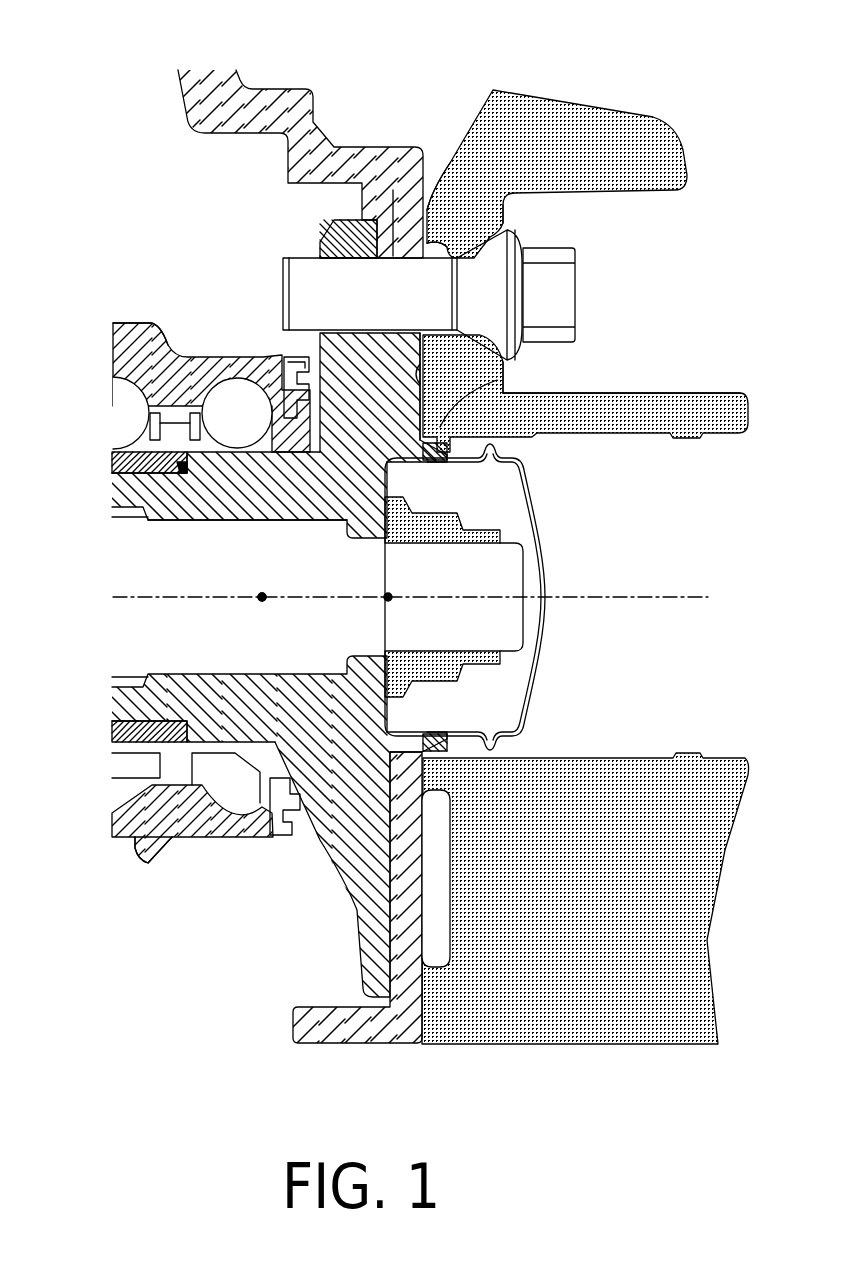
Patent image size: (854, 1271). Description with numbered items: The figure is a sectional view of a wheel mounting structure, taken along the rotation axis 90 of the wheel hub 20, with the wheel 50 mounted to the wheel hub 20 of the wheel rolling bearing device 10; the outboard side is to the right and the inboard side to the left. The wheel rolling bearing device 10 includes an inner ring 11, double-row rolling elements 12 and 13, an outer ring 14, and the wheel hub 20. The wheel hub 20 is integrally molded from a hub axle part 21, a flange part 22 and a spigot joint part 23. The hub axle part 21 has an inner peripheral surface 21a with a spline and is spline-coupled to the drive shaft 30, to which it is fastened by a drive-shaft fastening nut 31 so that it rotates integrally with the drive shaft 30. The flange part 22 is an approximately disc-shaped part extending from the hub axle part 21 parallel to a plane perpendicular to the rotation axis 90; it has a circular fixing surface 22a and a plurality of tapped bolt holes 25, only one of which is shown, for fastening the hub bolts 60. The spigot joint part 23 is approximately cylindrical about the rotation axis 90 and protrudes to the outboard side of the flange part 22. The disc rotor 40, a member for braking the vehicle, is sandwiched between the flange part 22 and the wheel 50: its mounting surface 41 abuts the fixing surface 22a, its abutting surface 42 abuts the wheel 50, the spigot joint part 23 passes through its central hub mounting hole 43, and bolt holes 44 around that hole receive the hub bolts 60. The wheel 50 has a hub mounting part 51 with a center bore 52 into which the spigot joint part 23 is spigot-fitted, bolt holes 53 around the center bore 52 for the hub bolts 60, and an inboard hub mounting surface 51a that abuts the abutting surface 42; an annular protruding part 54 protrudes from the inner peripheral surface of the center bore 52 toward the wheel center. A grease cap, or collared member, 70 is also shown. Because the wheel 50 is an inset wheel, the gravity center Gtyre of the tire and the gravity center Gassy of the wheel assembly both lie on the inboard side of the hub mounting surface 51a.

The wheel rolling bearing device 10 is at (60, 320).
The inner ring 11 is at (110, 458).
The rolling element 12 is at (118, 402).
The rolling element 13 is at (152, 420).
The outer ring 14 is at (132, 348).
The wheel hub 20 is at (255, 596).
The hub axle part 21 is at (118, 488).
The inner peripheral surface 21a is at (200, 528).
The flange part 22 is at (333, 242).
The fixing surface 22a is at (320, 352).
The spigot joint part 23 is at (423, 447).
The bolt hole 25 is at (312, 250).
The drive shaft 30 is at (120, 572).
The drive-shaft fastening nut 31 is at (462, 530).
The disc rotor 40 is at (288, 97).
The mounting surface 41 is at (366, 214).
The abutting surface 42 is at (428, 236).
The hub mounting hole 43 is at (396, 500).
The bolt hole 44 is at (365, 218).
The wheel 50 is at (608, 525).
The hub mounting part 51 is at (524, 100).
The hub mounting surface 51a is at (414, 378).
The center bore 52 is at (548, 480).
The bolt hole 53 is at (503, 203).
The annular protruding part 54 is at (503, 380).
The hub bolt 60 is at (577, 282).
The grease cap 70 is at (555, 543).
The rotation axis 90 is at (153, 597).
The gravity center of the tire Gtyre is at (261, 600).
The gravity center of the wheel assembly Gassy is at (389, 599).